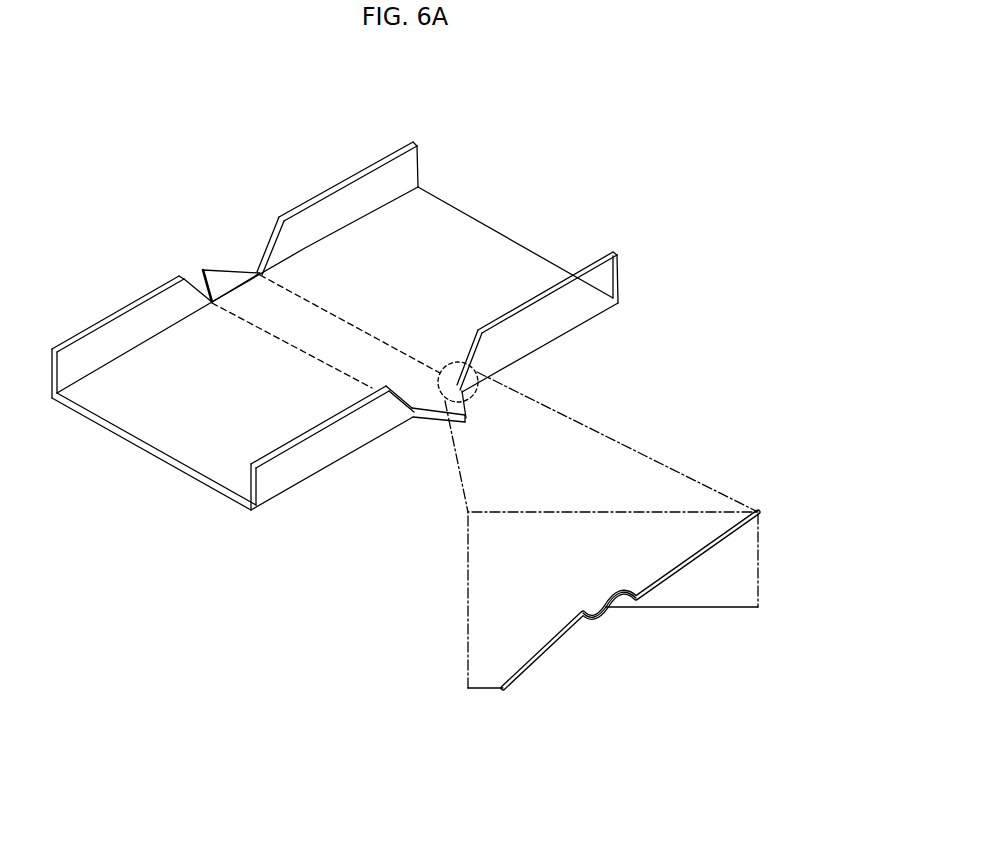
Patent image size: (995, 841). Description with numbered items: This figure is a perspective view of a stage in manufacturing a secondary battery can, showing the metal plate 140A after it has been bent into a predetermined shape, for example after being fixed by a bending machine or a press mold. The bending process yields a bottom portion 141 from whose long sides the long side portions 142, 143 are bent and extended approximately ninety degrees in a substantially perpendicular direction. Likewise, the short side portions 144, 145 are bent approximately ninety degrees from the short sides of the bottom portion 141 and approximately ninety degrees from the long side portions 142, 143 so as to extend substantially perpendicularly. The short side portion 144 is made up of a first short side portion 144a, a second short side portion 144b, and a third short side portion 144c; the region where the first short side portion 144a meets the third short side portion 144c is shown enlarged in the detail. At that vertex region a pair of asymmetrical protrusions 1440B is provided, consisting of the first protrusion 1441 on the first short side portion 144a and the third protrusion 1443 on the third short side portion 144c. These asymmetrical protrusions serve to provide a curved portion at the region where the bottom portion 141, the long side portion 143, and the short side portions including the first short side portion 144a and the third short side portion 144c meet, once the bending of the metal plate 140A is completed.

The metal plate 140A is at (487, 172).
The bottom portion 141 is at (300, 317).
The long side portion 142 is at (145, 415).
The long side portion 143 is at (515, 260).
The short side portion 144 is at (347, 497).
The first short side portion 144a is at (435, 405).
The second short side portion 144b is at (290, 475).
The third short side portion 144c is at (557, 325).
The short side portion 145 is at (200, 265).
The first protrusion 1441 is at (598, 613).
The third protrusion 1443 is at (623, 598).
The pair of asymmetrical protrusions 1440B is at (573, 703).